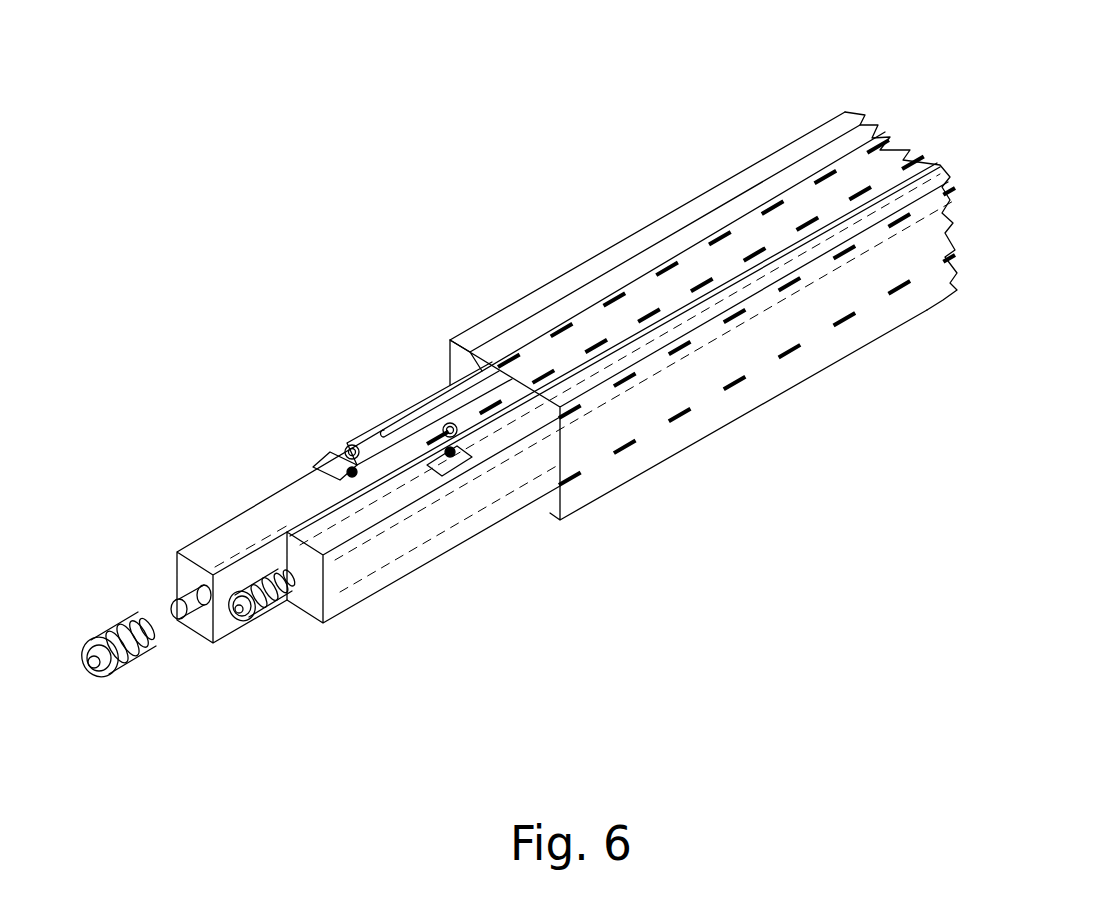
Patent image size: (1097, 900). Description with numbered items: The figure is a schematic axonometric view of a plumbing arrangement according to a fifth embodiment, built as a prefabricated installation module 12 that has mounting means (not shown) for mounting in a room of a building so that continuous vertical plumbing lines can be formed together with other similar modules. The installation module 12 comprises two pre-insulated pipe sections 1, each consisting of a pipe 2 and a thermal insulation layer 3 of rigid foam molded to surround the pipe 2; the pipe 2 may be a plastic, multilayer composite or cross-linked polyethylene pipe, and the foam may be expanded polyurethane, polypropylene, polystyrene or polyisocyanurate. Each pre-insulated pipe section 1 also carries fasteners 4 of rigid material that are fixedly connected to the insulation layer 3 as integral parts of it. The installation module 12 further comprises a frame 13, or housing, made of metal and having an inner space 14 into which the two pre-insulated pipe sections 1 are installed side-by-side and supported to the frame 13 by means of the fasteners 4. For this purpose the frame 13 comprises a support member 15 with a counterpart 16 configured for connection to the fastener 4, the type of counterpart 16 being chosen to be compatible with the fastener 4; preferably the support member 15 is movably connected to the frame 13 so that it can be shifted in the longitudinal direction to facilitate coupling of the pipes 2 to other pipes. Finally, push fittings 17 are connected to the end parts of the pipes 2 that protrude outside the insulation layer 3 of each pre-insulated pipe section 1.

The prefabricated installation module 12 is at (665, 114).
The frame 13 is at (628, 237).
The inner space 14 is at (470, 366).
The support member 15 is at (402, 412).
The counterpart 16 is at (352, 447).
The pre-insulated pipe section 1 is at (200, 552).
The pipe 2 is at (172, 600).
The thermal insulation layer 3 is at (207, 552).
The fastener 4 is at (330, 458).
The push fitting 17 is at (110, 628).